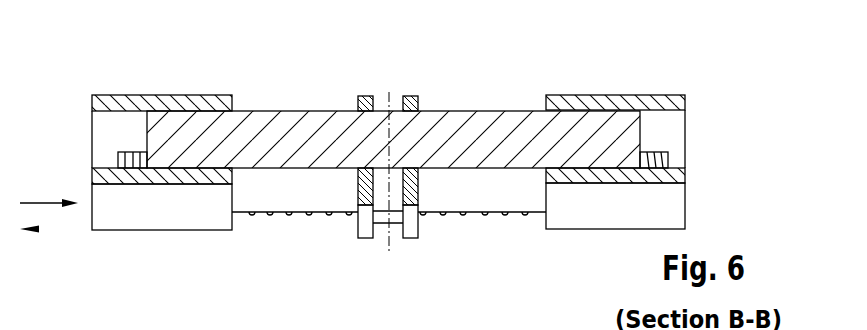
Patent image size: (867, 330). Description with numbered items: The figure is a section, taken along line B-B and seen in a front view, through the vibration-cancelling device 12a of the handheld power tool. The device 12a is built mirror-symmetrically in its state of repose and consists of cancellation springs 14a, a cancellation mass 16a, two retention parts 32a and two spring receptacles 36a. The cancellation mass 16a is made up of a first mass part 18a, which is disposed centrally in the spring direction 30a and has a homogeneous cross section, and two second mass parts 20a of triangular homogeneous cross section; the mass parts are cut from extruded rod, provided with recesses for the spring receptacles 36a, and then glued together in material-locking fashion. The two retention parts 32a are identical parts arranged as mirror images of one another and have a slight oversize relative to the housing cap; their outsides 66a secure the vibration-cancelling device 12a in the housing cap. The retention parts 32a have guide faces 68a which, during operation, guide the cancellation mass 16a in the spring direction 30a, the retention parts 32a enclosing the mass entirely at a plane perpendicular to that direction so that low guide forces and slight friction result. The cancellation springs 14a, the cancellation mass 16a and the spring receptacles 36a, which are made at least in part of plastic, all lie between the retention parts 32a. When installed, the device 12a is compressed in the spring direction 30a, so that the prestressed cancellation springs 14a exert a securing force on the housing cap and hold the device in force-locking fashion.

The vibration-cancelling device 12a is at (175, 78).
The cancellation springs 14a is at (125, 160).
The cancellation mass 16a is at (304, 95).
The first mass part 18a is at (497, 130).
The second mass parts 20a is at (318, 200).
The spring direction 30a is at (50, 205).
The retention parts 32a is at (133, 105).
The spring receptacles 36a is at (383, 213).
The outsides 66a is at (92, 175).
The guide faces 68a is at (123, 112).